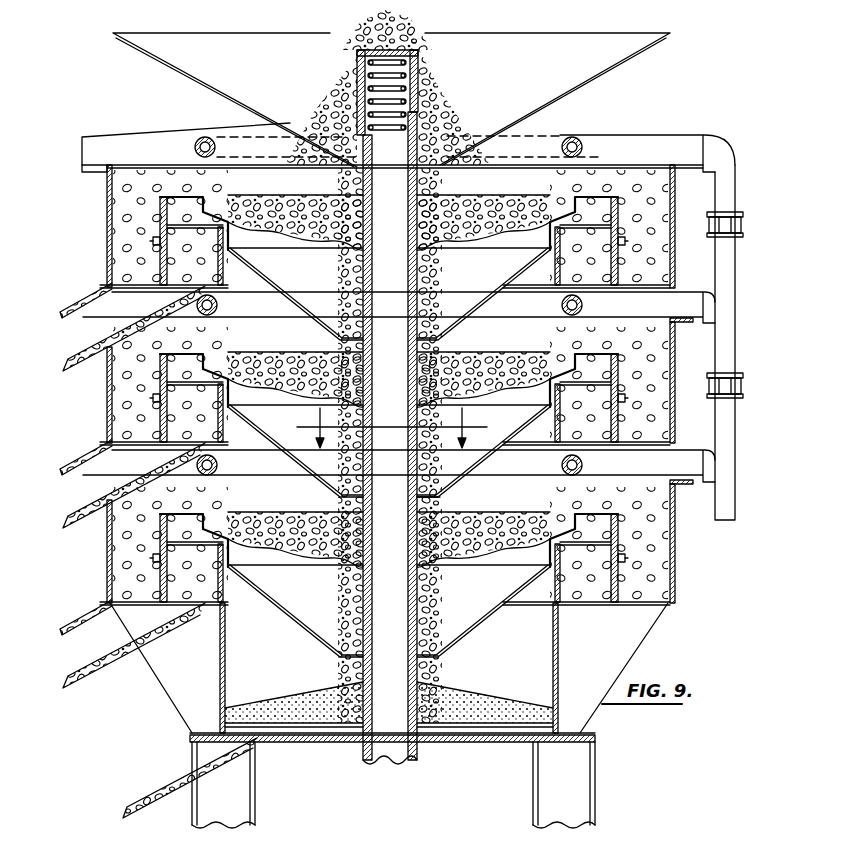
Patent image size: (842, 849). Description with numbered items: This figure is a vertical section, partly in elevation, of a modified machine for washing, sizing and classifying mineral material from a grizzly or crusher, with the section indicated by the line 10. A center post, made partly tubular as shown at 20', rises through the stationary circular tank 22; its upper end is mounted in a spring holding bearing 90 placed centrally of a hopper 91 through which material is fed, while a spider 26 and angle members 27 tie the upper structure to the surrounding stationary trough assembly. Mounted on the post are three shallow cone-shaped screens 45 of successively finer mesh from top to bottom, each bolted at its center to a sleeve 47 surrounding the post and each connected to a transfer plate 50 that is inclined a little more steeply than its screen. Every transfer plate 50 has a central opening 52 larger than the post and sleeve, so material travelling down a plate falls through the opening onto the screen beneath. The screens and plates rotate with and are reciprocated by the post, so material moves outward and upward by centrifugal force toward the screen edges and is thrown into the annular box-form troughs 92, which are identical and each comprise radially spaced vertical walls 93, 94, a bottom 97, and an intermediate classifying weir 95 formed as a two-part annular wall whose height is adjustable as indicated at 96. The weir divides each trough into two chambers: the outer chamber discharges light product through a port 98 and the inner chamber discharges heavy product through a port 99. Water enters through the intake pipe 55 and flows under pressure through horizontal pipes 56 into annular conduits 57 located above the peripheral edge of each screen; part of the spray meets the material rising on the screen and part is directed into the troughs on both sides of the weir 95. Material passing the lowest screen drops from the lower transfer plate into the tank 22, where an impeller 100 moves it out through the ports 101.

The section line 10- 10 is at (388, 425).
The tubular portion of center post 20' is at (397, 458).
The circular tank 22 is at (220, 680).
The spider 26 is at (97, 143).
The angle members 27 is at (100, 178).
The screen 45 is at (512, 222).
The sleeve 47 is at (418, 377).
The transfer plate 50 is at (330, 300).
The central opening 52 is at (433, 497).
The intake pipe 55 is at (735, 195).
The horizontal pipes 56 is at (655, 145).
The annular conduit 57 is at (206, 137).
The spring holding bearing 90 is at (423, 72).
The hopper 91 is at (577, 82).
The annular box-form trough 92 is at (120, 226).
The vertical wall 93 is at (107, 208).
The vertical wall 94 is at (220, 240).
The classifying weir 95 is at (163, 257).
The height adjustment 96 is at (628, 240).
The bottom 97 is at (97, 313).
The outer chamber port 98 is at (62, 300).
The inner chamber port 99 is at (66, 355).
The impeller 100 is at (293, 718).
The ports 101 is at (150, 782).